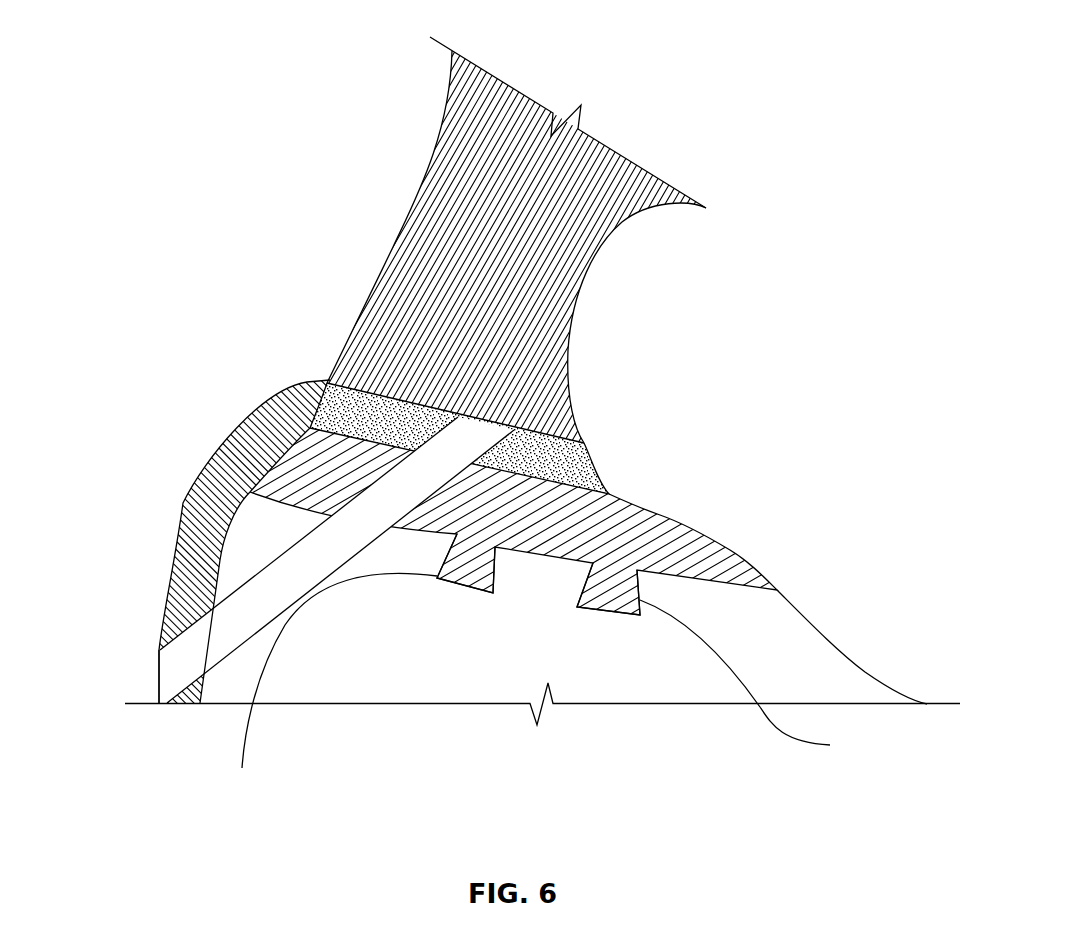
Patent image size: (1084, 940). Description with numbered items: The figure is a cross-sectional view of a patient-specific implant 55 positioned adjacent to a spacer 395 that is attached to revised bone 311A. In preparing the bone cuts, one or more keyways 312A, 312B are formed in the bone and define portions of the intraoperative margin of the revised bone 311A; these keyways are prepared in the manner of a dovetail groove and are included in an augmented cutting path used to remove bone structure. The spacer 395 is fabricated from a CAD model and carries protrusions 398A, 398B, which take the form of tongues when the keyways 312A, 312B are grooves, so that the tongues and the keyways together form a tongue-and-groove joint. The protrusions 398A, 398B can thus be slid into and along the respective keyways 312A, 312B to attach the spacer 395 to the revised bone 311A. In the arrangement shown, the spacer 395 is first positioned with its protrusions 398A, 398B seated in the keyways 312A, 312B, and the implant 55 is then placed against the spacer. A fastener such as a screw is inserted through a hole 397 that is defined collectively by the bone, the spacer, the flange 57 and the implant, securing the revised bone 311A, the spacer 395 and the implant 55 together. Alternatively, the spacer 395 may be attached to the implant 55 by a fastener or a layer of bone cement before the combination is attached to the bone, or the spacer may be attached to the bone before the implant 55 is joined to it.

The implant 55 is at (416, 146).
The flange 57 is at (156, 481).
The spacer 395 is at (696, 516).
The hole 397 is at (147, 679).
The revised bone 311A is at (836, 616).
The keyway 312A is at (324, 690).
The keyway 312B is at (770, 681).
The protrusion 398A is at (465, 586).
The protrusion 398B is at (600, 610).